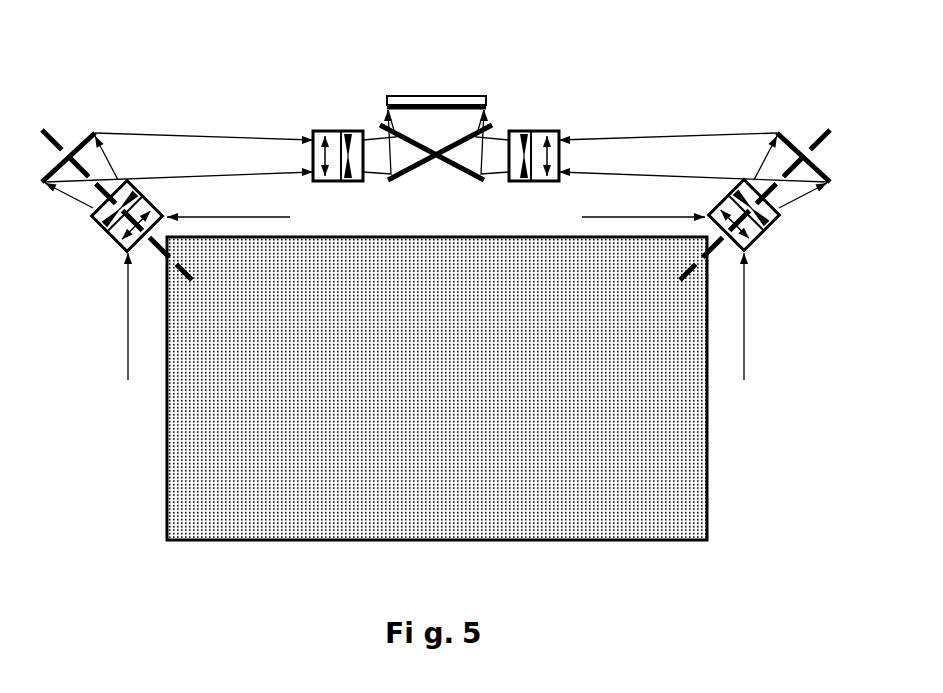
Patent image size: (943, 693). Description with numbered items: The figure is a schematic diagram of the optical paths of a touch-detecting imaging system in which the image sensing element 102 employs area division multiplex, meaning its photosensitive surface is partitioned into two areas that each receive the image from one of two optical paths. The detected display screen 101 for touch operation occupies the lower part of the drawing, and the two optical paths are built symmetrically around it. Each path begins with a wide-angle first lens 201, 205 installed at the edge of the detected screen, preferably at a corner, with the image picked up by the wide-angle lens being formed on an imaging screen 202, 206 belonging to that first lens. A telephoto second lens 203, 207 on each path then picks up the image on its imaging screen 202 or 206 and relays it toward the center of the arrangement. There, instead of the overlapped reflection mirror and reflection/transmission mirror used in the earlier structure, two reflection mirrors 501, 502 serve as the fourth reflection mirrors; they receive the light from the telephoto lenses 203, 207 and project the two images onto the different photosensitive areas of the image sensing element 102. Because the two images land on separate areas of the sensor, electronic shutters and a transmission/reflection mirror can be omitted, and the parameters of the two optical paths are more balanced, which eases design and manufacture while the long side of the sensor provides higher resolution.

The display screen 101 is at (167, 443).
The image sensing element 102 is at (435, 96).
The first lens 201 is at (110, 237).
The imaging screen 202 is at (80, 133).
The second lens 203 is at (338, 131).
The first lens 205 is at (760, 237).
The imaging screen 206 is at (790, 132).
The second lens 207 is at (533, 131).
The reflection mirror 501 is at (412, 168).
The reflection mirror 502 is at (460, 168).